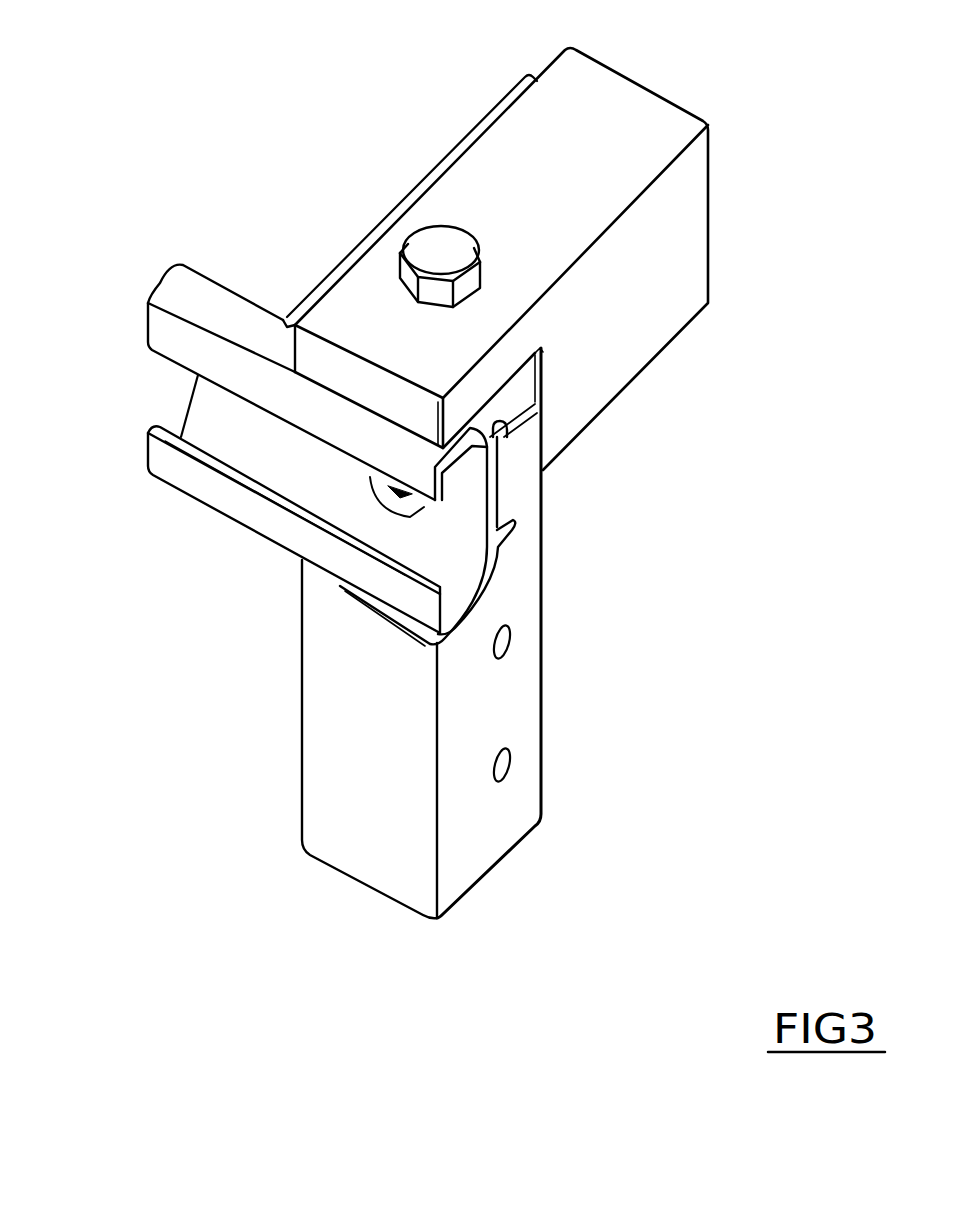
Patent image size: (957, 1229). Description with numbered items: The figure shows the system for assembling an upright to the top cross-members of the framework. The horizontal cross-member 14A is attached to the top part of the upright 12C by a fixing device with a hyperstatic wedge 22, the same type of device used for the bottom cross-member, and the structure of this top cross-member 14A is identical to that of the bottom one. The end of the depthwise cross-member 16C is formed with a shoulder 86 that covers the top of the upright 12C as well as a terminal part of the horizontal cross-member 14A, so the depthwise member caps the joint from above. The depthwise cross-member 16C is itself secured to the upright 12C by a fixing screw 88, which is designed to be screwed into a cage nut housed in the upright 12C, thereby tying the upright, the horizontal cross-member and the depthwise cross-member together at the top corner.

The upright 12C is at (350, 802).
The horizontal cross-member 14A is at (237, 502).
The depthwise cross-member 16C is at (592, 100).
The hyperstatic wedge 22 is at (507, 490).
The shoulder 86 is at (508, 383).
The fixing screw 88 is at (437, 245).